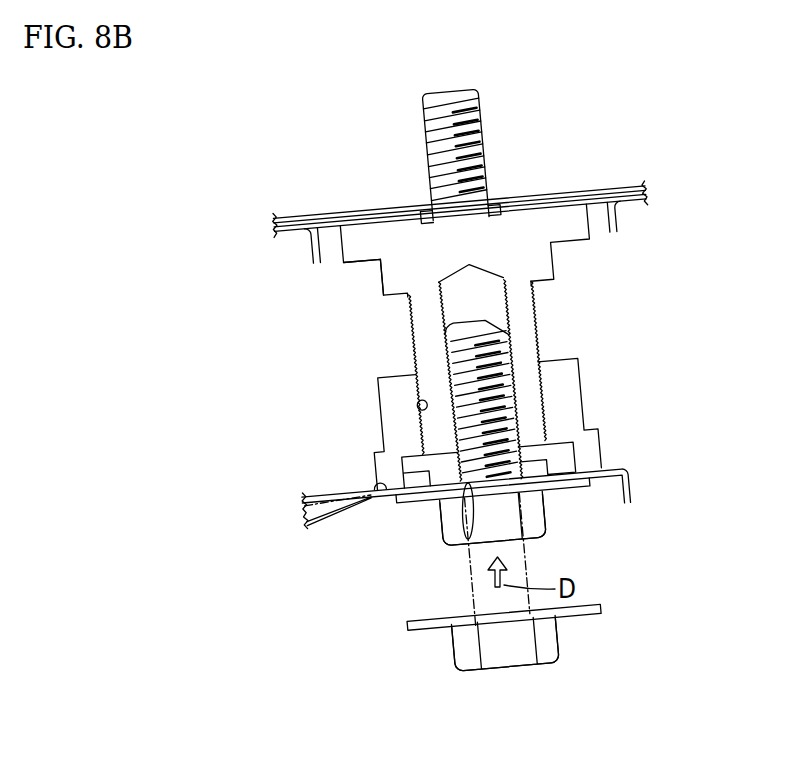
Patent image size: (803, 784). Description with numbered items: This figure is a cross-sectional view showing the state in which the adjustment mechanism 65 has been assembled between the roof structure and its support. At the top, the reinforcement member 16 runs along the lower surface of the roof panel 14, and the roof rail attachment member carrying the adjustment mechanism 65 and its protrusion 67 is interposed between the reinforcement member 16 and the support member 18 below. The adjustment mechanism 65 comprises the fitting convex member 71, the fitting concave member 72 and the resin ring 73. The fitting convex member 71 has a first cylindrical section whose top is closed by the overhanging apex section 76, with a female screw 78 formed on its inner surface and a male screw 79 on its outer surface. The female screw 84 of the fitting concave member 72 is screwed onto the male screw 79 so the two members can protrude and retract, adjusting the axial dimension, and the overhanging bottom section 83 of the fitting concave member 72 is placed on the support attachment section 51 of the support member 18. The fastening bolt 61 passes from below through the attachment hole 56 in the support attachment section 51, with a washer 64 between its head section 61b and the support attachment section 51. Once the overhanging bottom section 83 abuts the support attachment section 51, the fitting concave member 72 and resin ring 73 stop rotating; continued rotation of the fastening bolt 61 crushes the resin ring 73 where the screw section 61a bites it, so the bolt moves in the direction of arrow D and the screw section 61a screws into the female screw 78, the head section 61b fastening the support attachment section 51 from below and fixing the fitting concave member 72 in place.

The roof panel 14 is at (630, 185).
The reinforcement member 16 is at (595, 197).
The support member 18 is at (627, 457).
The support attachment section 51 is at (370, 490).
The attachment hole 56 is at (466, 538).
The fastening bolt 61 is at (457, 665).
The screw section 61a is at (520, 355).
The head section 61b is at (535, 521).
The washer 64 is at (412, 503).
The adjustment mechanism 65 is at (603, 263).
The protrusion 67 is at (483, 127).
The fitting convex member 71 is at (405, 312).
The fitting concave member 72 is at (380, 398).
The resin ring 73 is at (402, 459).
The overhanging apex section 76 is at (351, 257).
The female screw 78 is at (447, 341).
The male screw 79 is at (537, 305).
The overhanging bottom section 83 is at (598, 442).
The female screw 84 is at (417, 411).